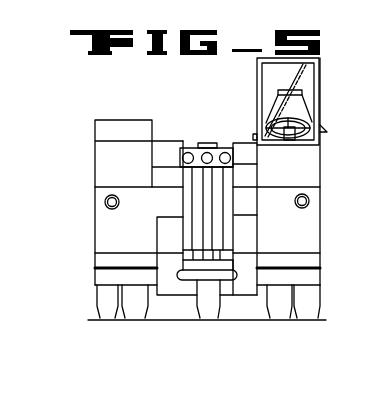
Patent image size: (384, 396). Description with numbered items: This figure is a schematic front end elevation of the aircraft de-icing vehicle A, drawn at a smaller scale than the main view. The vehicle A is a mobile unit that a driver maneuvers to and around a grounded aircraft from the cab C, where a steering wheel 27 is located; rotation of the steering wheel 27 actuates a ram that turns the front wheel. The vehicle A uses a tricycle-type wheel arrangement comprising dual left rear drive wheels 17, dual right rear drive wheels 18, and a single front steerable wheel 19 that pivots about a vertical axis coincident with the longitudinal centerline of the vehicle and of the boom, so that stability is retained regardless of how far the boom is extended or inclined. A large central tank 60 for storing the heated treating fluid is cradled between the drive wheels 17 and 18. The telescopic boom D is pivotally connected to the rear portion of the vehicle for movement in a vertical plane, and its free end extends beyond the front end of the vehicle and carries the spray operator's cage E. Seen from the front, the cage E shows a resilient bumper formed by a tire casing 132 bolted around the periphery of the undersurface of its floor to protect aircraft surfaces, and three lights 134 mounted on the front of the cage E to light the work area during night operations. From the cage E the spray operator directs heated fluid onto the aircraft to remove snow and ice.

The vehicle A is at (92, 182).
The cab C is at (256, 74).
The telescopic boom D is at (205, 140).
The spray operator's cage E is at (181, 198).
The dual left rear drive wheels 17 is at (280, 309).
The dual right rear drive wheels 18 is at (107, 309).
The single front steerable wheel 19 is at (209, 309).
The steering wheel 27 is at (302, 118).
The large central tank 60 is at (247, 233).
The tire casing 132 is at (222, 276).
The lights 134 is at (183, 153).